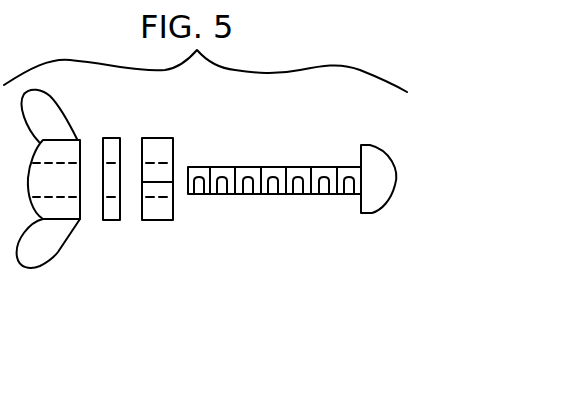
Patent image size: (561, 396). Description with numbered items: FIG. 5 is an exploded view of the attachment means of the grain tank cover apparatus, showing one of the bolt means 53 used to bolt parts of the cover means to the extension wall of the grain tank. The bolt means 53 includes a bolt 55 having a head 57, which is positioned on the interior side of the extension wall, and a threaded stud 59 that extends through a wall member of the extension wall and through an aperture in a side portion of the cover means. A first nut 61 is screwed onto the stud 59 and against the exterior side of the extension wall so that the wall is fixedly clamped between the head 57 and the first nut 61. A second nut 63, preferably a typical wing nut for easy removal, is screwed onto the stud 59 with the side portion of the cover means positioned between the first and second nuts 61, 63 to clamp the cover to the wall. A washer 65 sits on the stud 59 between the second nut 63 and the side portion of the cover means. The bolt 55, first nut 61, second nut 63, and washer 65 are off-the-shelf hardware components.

The bolt means 53 is at (228, 250).
The bolt 55 is at (280, 195).
The head 57 is at (373, 200).
The threaded stud 59 is at (267, 175).
The first nut 61 is at (164, 150).
The second nut 63 is at (47, 240).
The washer 65 is at (110, 210).